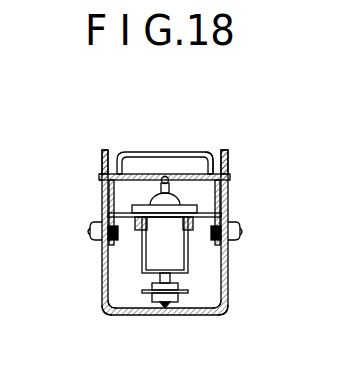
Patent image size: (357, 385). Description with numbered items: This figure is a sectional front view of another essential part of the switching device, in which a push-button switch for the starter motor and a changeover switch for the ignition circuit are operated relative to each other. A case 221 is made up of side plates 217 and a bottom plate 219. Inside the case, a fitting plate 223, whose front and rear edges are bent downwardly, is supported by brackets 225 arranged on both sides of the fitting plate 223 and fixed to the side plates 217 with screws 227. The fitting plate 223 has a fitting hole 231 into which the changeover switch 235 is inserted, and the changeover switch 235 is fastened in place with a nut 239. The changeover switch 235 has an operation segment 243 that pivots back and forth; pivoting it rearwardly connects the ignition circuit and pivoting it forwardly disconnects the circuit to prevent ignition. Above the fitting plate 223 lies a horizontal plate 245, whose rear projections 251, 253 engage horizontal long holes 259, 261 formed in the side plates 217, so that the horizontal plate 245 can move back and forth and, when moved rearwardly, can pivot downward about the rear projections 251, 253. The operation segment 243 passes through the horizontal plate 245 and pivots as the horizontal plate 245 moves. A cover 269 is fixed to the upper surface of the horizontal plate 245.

The side plate 217 is at (229, 193).
The bottom plate 219 is at (178, 220).
The case 221 is at (233, 296).
The fitting plate 223 is at (104, 205).
The bracket 225 is at (94, 222).
The screw 227 is at (96, 240).
The fitting hole 231 is at (138, 226).
The changeover switch 235 is at (160, 225).
The nut 239 is at (103, 306).
The operation segment 243 is at (186, 151).
The horizontal plate 245 is at (212, 152).
The projection 251 is at (233, 176).
The projection 253 is at (99, 168).
The horizontal long hole 259 is at (232, 168).
The horizontal long hole 261 is at (97, 168).
The cover 269 is at (163, 175).